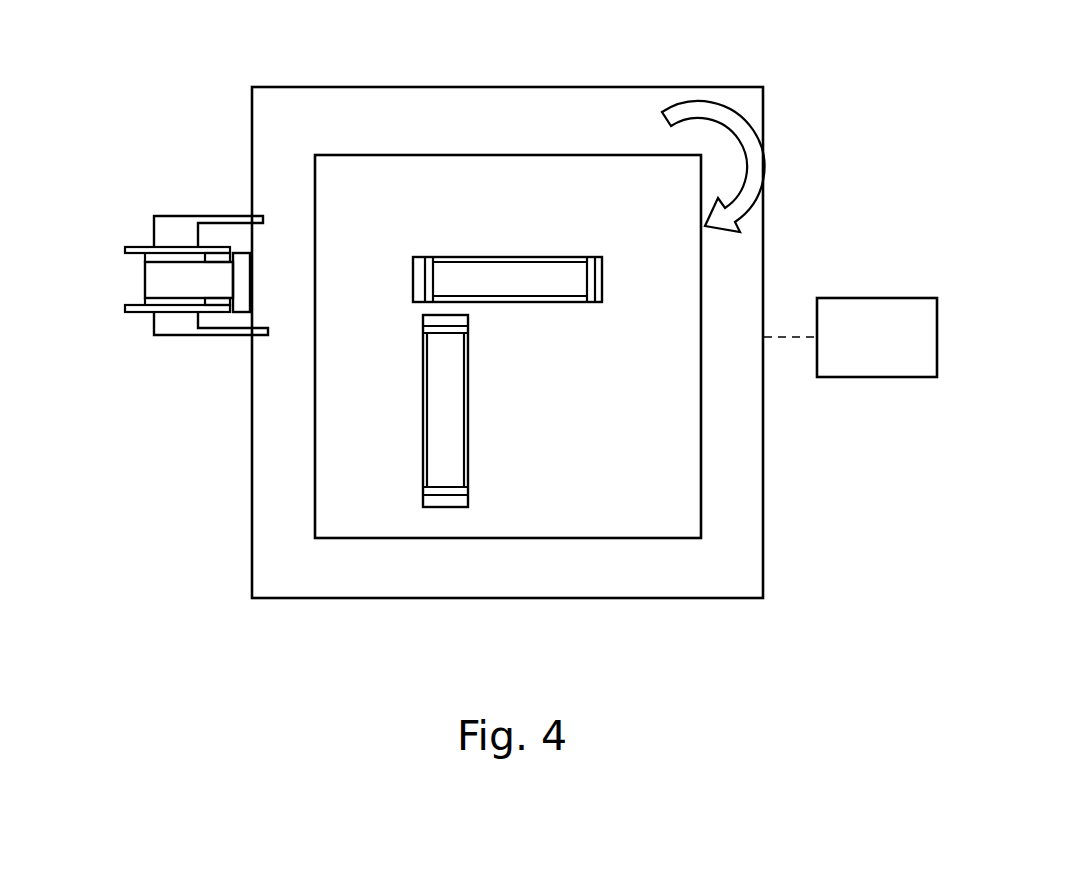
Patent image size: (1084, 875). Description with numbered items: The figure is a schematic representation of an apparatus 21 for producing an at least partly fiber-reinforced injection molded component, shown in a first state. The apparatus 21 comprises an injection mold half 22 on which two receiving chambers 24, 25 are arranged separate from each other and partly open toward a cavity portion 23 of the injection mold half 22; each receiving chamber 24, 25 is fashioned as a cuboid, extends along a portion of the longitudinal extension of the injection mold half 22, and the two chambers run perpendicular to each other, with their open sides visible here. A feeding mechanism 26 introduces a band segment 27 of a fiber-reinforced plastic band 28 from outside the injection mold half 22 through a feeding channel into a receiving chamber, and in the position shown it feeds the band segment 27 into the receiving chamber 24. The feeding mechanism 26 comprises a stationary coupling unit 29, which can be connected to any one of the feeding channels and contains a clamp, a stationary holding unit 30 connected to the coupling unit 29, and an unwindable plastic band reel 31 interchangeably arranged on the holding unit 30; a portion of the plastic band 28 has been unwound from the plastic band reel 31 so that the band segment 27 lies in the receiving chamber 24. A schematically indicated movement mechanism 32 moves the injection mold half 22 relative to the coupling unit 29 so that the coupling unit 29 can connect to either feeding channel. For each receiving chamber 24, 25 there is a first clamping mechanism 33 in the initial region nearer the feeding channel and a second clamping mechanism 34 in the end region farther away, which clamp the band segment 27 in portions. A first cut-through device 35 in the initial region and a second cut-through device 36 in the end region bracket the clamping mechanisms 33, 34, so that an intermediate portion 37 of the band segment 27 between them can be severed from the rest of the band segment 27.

The apparatus 21 is at (579, 308).
The injection mold half 22 is at (597, 125).
The cavity portion 23 is at (652, 475).
The receiving chamber 24 is at (562, 257).
The receiving chamber 25 is at (438, 428).
The feeding mechanism 26 is at (183, 178).
The band segment 27 is at (510, 257).
The fiber-reinforced plastic band 28 is at (132, 278).
The coupling unit 29 is at (243, 272).
The holding unit 30 is at (182, 341).
The plastic band reel 31 is at (137, 312).
The movement mechanism 32 is at (874, 316).
The first clamping mechanism 33 is at (433, 268).
The second clamping mechanism 34 is at (588, 257).
The first cut-through device 35 is at (422, 268).
The second cut-through device 36 is at (598, 285).
The intermediate portion 37 is at (462, 273).